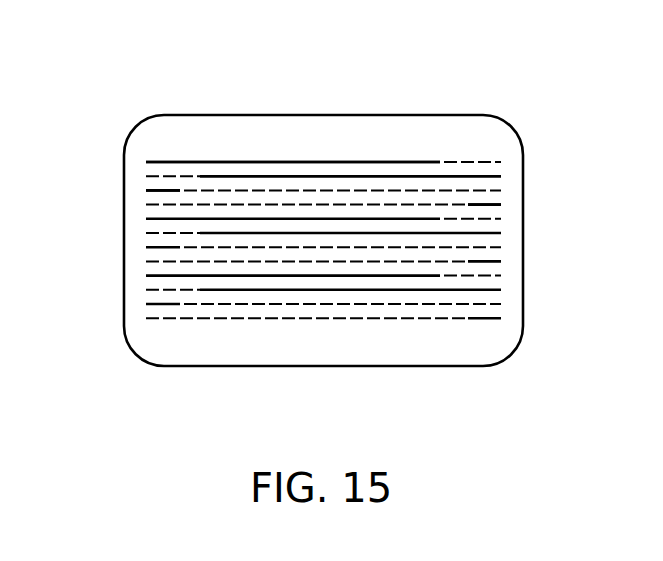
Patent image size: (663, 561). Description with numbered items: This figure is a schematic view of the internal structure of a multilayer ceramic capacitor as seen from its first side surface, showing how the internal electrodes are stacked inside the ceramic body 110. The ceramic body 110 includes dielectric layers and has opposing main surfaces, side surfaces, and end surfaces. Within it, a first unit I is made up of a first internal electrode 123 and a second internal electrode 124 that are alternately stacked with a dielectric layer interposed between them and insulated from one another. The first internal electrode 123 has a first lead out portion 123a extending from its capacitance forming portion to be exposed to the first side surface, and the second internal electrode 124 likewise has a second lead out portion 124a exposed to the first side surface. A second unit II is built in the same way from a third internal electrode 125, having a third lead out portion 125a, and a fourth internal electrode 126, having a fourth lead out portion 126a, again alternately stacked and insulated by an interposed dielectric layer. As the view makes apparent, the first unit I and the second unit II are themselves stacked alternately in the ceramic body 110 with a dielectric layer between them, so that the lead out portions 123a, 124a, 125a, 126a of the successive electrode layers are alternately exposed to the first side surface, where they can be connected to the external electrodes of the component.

The ceramic body 110 is at (257, 115).
The first internal electrode 123 is at (298, 162).
The first lead out portion 123a is at (172, 162).
The second internal electrode 124 is at (375, 176).
The second lead out portion 124a is at (473, 176).
The third internal electrode 125 is at (225, 190).
The third lead out portion 125a is at (175, 190).
The fourth internal electrode 126 is at (450, 206).
The fourth lead out portion 126a is at (487, 206).
The first unit I is at (533, 160).
The second unit II is at (533, 190).